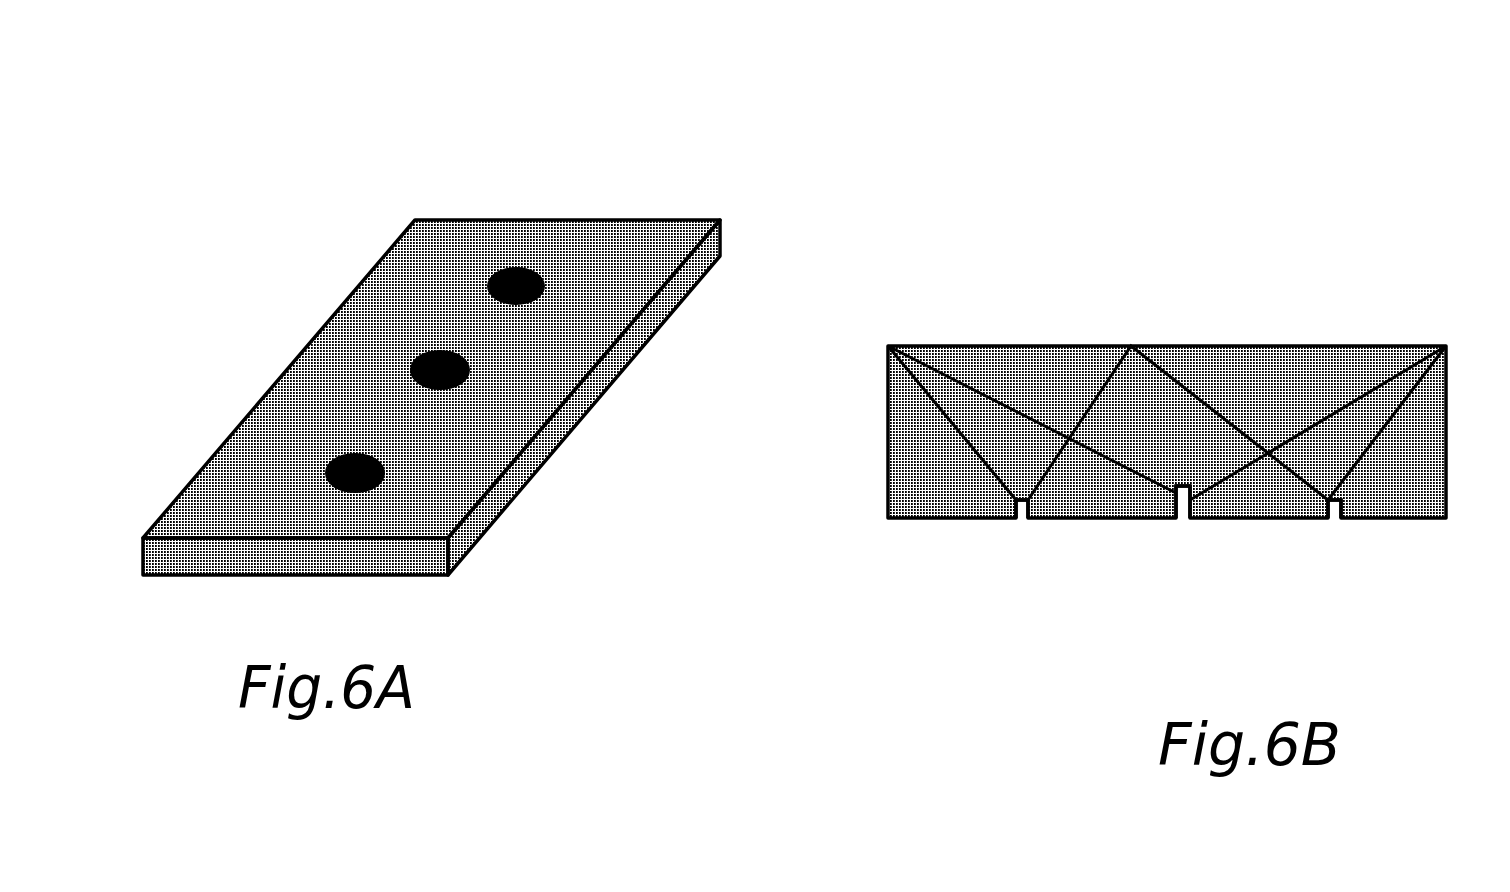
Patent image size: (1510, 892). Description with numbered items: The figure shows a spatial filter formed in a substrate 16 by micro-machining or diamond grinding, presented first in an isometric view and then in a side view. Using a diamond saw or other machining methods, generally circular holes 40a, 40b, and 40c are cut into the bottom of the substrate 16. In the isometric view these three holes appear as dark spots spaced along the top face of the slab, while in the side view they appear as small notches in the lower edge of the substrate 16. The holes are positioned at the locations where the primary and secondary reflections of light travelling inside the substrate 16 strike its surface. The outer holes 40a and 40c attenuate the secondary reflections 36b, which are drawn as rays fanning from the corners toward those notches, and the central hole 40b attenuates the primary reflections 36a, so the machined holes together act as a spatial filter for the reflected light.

In FIG. 6A, the substrate 16 is at (648, 211).
In FIG. 6B, the substrate 16 is at (1440, 452).
In FIG. 6A, the hole 40a is at (320, 452).
In FIG. 6B, the hole 40a is at (1017, 513).
In FIG. 6A, the hole 40b is at (402, 360).
In FIG. 6B, the hole 40b is at (1182, 512).
In FIG. 6A, the hole 40c is at (480, 272).
In FIG. 6B, the hole 40c is at (1333, 512).
In FIG. 6B, the primary reflections 36a is at (1015, 410).
In FIG. 6B, the secondary reflections 36b is at (970, 450).